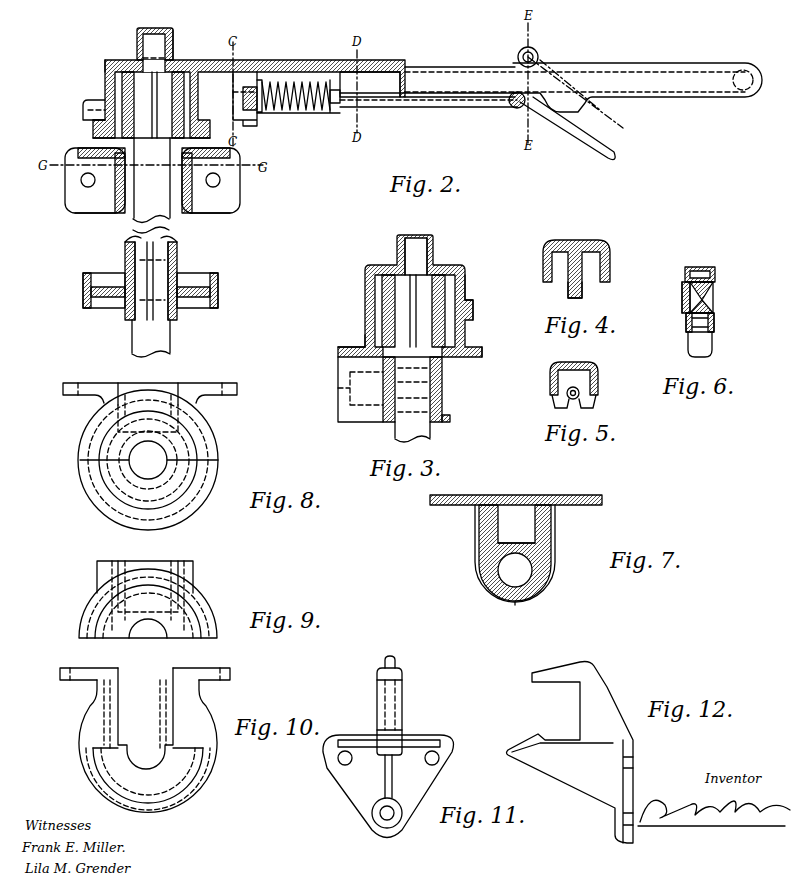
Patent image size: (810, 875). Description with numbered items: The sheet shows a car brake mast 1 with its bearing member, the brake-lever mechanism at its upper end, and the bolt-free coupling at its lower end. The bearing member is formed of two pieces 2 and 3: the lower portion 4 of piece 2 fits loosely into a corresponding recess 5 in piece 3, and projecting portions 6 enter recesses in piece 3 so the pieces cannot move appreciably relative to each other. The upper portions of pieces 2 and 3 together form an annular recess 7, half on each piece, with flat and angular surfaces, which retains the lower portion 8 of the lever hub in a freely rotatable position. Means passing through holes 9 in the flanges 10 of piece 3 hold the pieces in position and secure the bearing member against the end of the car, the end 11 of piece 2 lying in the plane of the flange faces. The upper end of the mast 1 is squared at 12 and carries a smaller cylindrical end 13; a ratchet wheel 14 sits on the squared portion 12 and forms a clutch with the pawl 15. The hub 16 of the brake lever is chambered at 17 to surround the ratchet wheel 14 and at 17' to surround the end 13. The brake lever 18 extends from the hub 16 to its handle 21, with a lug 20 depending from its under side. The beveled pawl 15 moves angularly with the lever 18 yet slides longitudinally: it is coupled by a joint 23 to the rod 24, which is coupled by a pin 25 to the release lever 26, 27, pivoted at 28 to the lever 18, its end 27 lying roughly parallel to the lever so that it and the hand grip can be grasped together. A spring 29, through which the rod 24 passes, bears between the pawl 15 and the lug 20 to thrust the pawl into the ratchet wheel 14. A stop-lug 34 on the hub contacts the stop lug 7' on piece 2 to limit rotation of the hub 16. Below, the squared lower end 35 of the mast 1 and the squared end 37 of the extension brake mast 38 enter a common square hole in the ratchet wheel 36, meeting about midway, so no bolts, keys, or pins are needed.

In FIG. 2, the brake mast 1 is at (151, 180).
In FIG. 3, the brake mast 1 is at (432, 385).
In FIG. 2, the bearing piece 2 is at (121, 215).
In FIG. 3, the bearing piece 2 is at (368, 412).
In FIG. 7, the bearing piece 2 is at (516, 529).
In FIG. 8, the bearing piece 2 is at (205, 457).
In FIG. 9, the bearing piece 2 is at (100, 575).
In FIG. 2, the bearing piece 3 is at (189, 215).
In FIG. 3, the bearing piece 3 is at (450, 418).
In FIG. 7, the bearing piece 3 is at (503, 600).
In FIG. 8, the bearing piece 3 is at (178, 492).
In FIG. 10, the bearing piece 3 is at (93, 737).
In FIG. 7, the lower portion of bearing piece 4 is at (552, 540).
In FIG. 8, the lower portion of bearing piece 4 is at (205, 430).
In FIG. 10, the recess 5 is at (132, 710).
In FIG. 2, the projecting portions 6 is at (112, 188).
In FIG. 3, the projecting portions 6 is at (372, 380).
In FIG. 7, the projecting portions 6 is at (535, 495).
In FIG. 8, the projecting portions 6 is at (118, 388).
In FIG. 9, the projecting portions 6 is at (112, 565).
In FIG. 8, the annular recess 7 is at (126, 460).
In FIG. 9, the annular recess 7 is at (153, 603).
In FIG. 10, the annular recess 7 is at (162, 779).
In FIG. 2, the stop lug 7' is at (80, 105).
In FIG. 8, the stop lug 7' is at (62, 453).
In FIG. 9, the stop lug 7' is at (72, 605).
In FIG. 2, the lower portion of hub 8 is at (100, 128).
In FIG. 3, the lower portion of hub 8 is at (365, 340).
In FIG. 2, the holes 9 is at (80, 181).
In FIG. 3, the holes 9 is at (372, 386).
In FIG. 7, the holes 9 is at (452, 508).
In FIG. 8, the holes 9 is at (80, 393).
In FIG. 10, the holes 9 is at (78, 668).
In FIG. 2, the flanges 10 is at (98, 214).
In FIG. 3, the flanges 10 is at (345, 408).
In FIG. 7, the flanges 10 is at (435, 505).
In FIG. 8, the flanges 10 is at (70, 384).
In FIG. 10, the flanges 10 is at (60, 674).
In FIG. 3, the end of bearing piece 11 is at (342, 348).
In FIG. 8, the end of bearing piece 11 is at (152, 383).
In FIG. 9, the end of bearing piece 11 is at (150, 561).
In FIG. 2, the squared portion of brake mast 12 is at (142, 92).
In FIG. 3, the squared portion of brake mast 12 is at (402, 300).
In FIG. 2, the cylindrical end of brake mast 13 is at (150, 45).
In FIG. 3, the cylindrical end of brake mast 13 is at (412, 250).
In FIG. 2, the ratchet wheel 14 is at (108, 62).
In FIG. 3, the ratchet wheel 14 is at (370, 268).
In FIG. 2, the pawl 15 is at (248, 74).
In FIG. 4, the pawl 15 is at (583, 293).
In FIG. 2, the hub 16 is at (112, 60).
In FIG. 3, the hub 16 is at (463, 278).
In FIG. 2, the chamber 17 is at (128, 143).
In FIG. 3, the chamber 17 is at (499, 345).
In FIG. 2, the chamber portion 17' is at (191, 39).
In FIG. 3, the chamber portion 17' is at (443, 245).
In FIG. 2, the brake lever 18 is at (425, 70).
In FIG. 4, the brake lever 18 is at (560, 242).
In FIG. 5, the brake lever 18 is at (552, 373).
In FIG. 6, the brake lever 18 is at (684, 290).
In FIG. 2, the lug 20 is at (337, 104).
In FIG. 5, the lug 20 is at (552, 400).
In FIG. 2, the handle 21 is at (686, 72).
In FIG. 2, the joint 23 is at (258, 78).
In FIG. 2, the rod 24 is at (446, 109).
In FIG. 5, the rod 24 is at (580, 393).
In FIG. 2, the pin 25 is at (512, 107).
In FIG. 6, the pin 25 is at (716, 322).
In FIG. 2, the lever 26 is at (545, 62).
In FIG. 6, the lever 26 is at (716, 292).
In FIG. 2, the lever end 27 is at (612, 153).
In FIG. 6, the lever end 27 is at (713, 346).
In FIG. 2, the pivot 28 is at (538, 52).
In FIG. 6, the pivot 28 is at (716, 275).
In FIG. 2, the spring 29 is at (298, 114).
In FIG. 3, the stop-lug 34 is at (474, 310).
In FIG. 2, the lower end of brake mast 35 is at (162, 268).
In FIG. 2, the ratchet wheel 36 is at (220, 291).
In FIG. 2, the end of extension brake mast 37 is at (172, 310).
In FIG. 2, the extension brake mast 38 is at (145, 330).